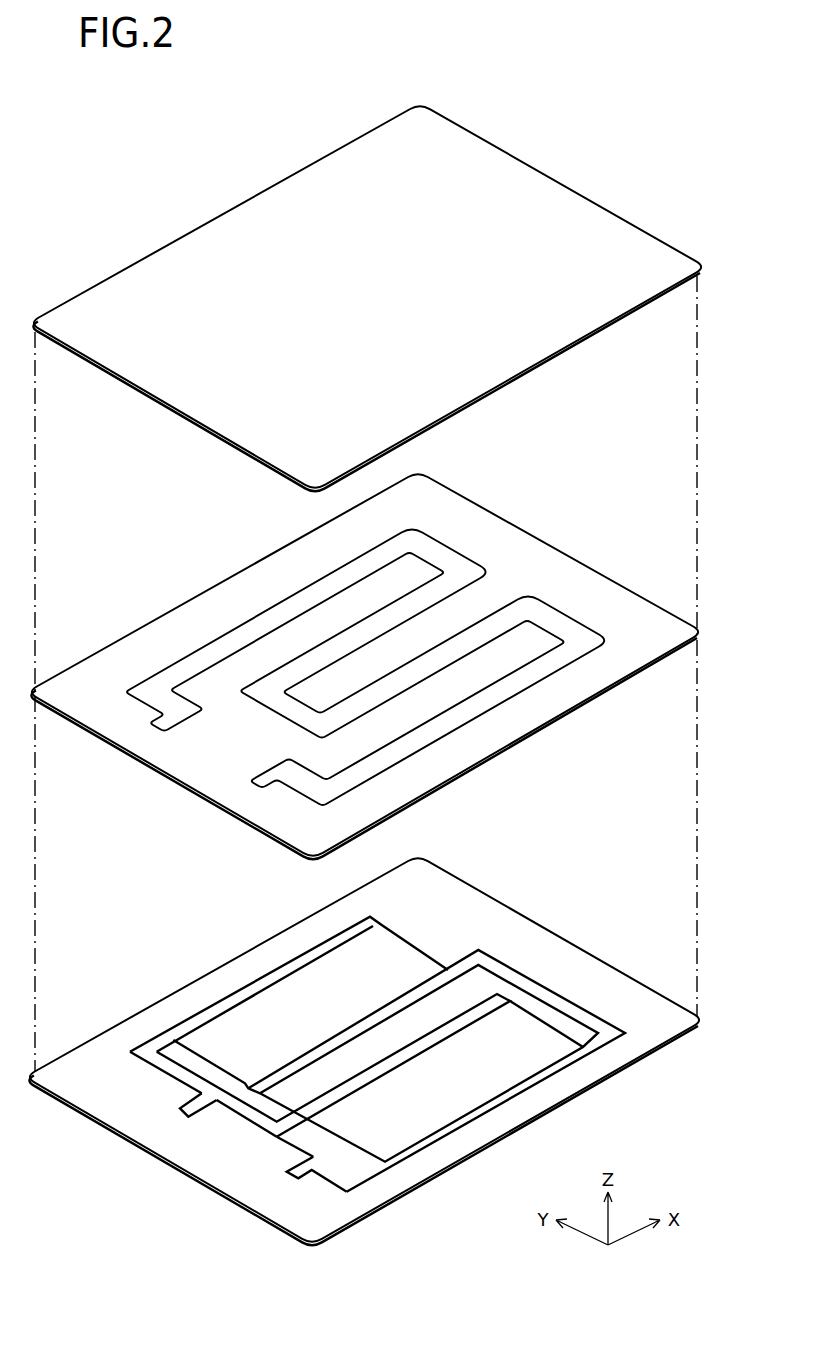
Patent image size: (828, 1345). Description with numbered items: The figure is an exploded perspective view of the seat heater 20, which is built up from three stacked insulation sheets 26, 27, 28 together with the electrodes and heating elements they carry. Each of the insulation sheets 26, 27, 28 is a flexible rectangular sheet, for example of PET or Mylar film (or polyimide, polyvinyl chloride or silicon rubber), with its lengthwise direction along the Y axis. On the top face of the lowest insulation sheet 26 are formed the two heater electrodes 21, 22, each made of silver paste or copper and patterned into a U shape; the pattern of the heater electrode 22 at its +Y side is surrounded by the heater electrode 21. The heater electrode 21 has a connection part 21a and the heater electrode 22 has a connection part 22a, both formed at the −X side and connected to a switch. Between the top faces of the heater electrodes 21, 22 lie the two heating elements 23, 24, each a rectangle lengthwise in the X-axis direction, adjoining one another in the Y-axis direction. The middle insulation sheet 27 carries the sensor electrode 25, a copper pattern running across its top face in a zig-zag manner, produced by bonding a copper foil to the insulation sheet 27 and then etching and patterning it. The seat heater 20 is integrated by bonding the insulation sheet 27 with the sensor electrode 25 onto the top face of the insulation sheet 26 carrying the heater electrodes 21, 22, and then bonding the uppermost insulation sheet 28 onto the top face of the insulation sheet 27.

The seat heater 20 is at (97, 143).
The heater electrode 21 is at (293, 965).
The connection part 21a is at (178, 1108).
The heater electrode 22 is at (498, 968).
The connection part 22a is at (290, 1179).
The heating element 23 is at (257, 1012).
The heating element 24 is at (535, 1035).
The sensor electrode 25 is at (543, 613).
The insulation sheet 26 is at (632, 995).
The insulation sheet 27 is at (633, 607).
The insulation sheet 28 is at (645, 250).